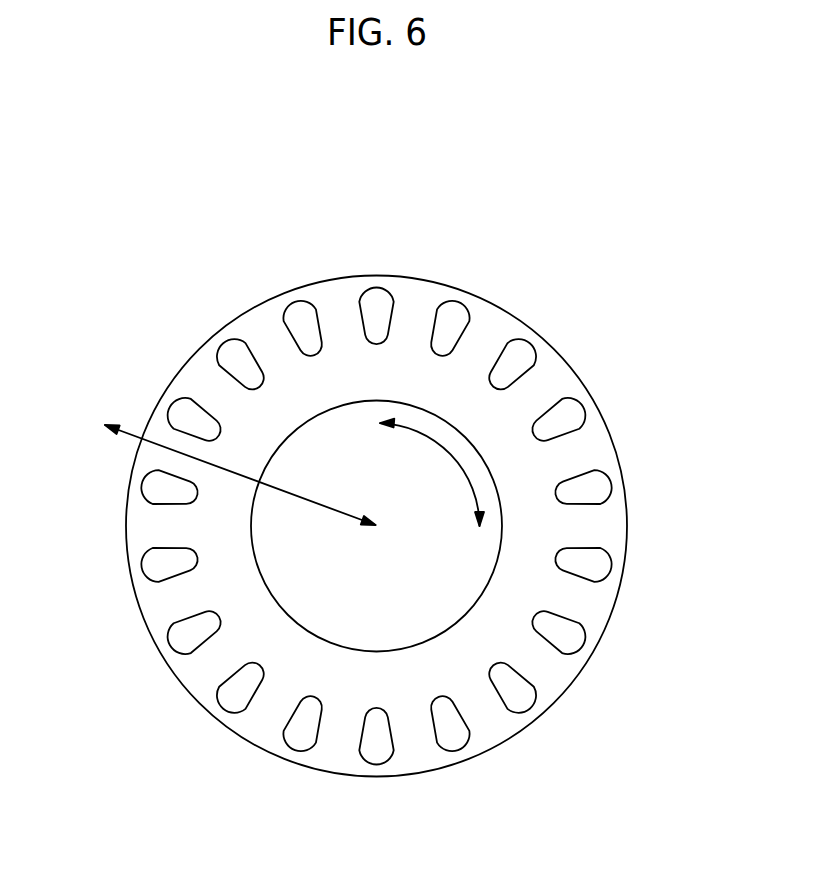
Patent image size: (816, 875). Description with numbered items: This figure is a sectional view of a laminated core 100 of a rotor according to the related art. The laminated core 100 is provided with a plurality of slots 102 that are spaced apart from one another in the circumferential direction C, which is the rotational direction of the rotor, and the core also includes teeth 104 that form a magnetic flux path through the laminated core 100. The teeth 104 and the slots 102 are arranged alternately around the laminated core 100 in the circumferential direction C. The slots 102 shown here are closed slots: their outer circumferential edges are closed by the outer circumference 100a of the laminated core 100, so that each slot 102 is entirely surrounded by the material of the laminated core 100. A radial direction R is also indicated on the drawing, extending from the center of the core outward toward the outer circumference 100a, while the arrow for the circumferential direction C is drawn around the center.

The laminated core 100 is at (168, 342).
The outer circumference 100a is at (337, 276).
The slot 102 is at (533, 342).
The tooth 104 is at (575, 455).
The radial direction R is at (240, 475).
The circumferential direction C is at (432, 472).